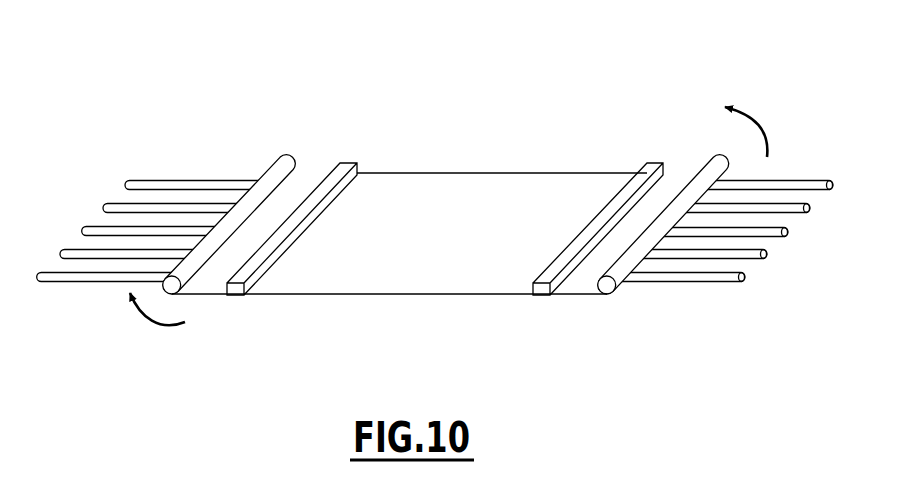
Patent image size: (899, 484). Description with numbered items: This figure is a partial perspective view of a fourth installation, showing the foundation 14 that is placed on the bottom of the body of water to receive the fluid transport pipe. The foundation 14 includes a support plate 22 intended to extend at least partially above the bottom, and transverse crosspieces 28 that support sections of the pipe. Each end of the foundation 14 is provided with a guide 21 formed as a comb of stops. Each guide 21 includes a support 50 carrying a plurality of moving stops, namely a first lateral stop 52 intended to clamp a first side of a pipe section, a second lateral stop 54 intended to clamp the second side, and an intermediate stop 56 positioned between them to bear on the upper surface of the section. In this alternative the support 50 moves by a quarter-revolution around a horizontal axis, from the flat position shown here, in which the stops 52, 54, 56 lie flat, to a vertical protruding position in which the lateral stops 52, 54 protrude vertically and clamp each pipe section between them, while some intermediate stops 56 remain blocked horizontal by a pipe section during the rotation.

The foundation 14 is at (260, 308).
The guide 21 is at (197, 144).
The support plate 22 is at (367, 285).
The transverse crosspiece 28 is at (338, 170).
The support 50 is at (272, 174).
The first lateral stop 52 is at (107, 206).
The second lateral stop 54 is at (68, 252).
The intermediate stop 56 is at (778, 235).